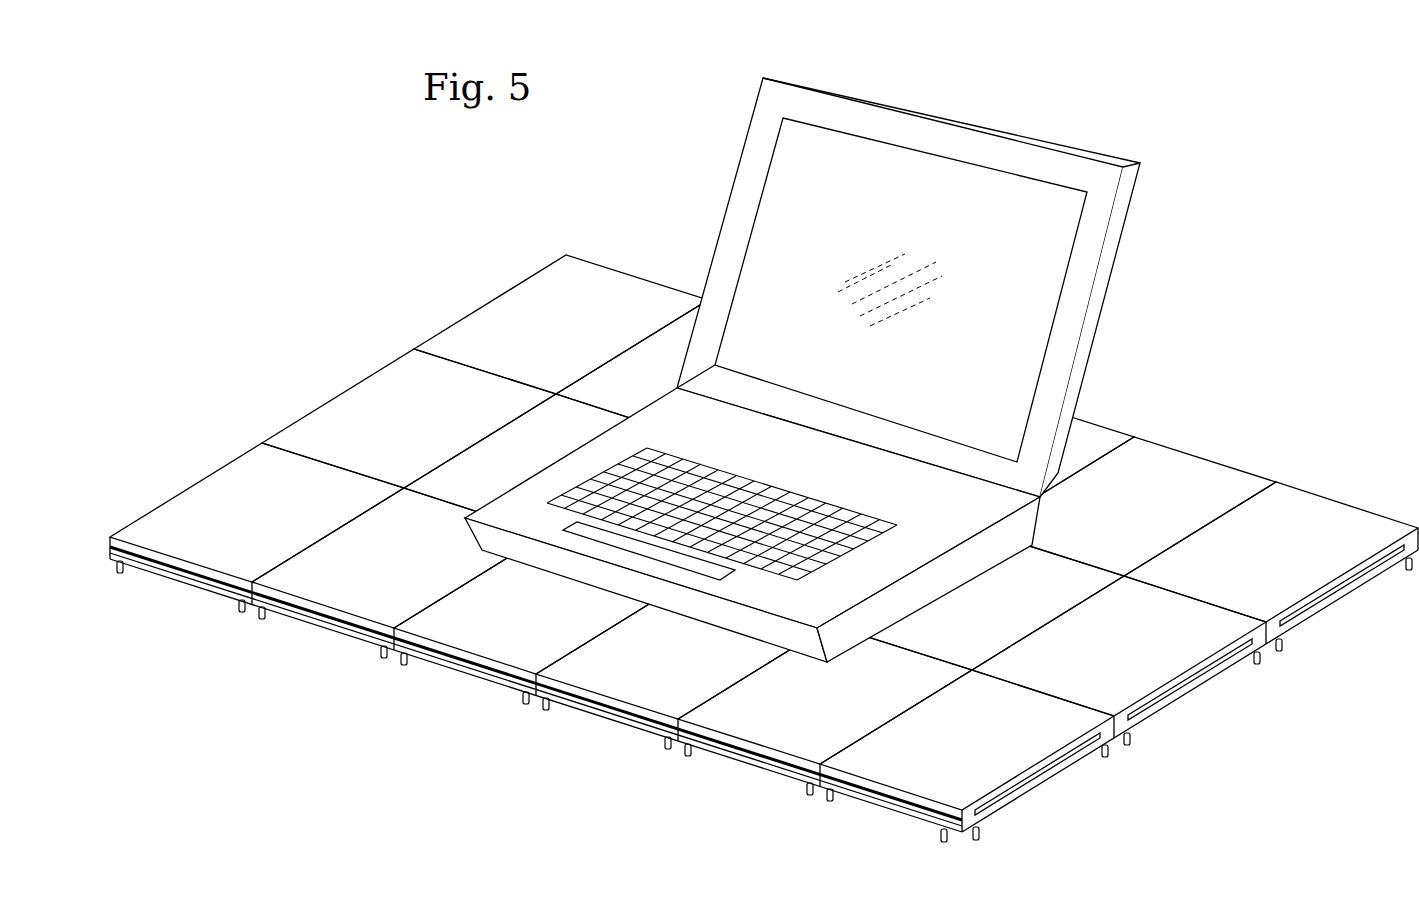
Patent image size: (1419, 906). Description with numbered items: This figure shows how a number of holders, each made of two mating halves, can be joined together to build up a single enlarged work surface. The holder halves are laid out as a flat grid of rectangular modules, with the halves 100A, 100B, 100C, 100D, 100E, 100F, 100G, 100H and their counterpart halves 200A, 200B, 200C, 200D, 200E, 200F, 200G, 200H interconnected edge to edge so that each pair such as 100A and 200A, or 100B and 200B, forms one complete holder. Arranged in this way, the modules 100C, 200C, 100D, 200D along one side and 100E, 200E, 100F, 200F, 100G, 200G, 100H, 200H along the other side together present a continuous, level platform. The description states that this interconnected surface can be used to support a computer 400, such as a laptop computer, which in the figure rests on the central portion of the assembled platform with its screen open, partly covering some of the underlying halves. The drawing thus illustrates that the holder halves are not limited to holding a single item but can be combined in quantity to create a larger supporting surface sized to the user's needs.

The computer 400 is at (982, 193).
The half of holder 100A is at (967, 740).
The half of holder 100B is at (1119, 646).
The half of holder 100C is at (1271, 552).
The half of holder 100D is at (1230, 398).
The half of holder 100E is at (703, 370).
The half of holder 100F is at (551, 464).
The half of holder 100G is at (399, 558).
The first type tile module 100H is at (683, 649).
The half of holder 200A is at (825, 694).
The half of holder 200B is at (977, 600).
The half of holder 200C is at (1129, 506).
The half of holder 200D is at (1253, 300).
The half of holder 200E is at (561, 324).
The half of holder 200F is at (409, 418).
The half of holder 200G is at (257, 512).
The second type tile module 200H is at (541, 604).